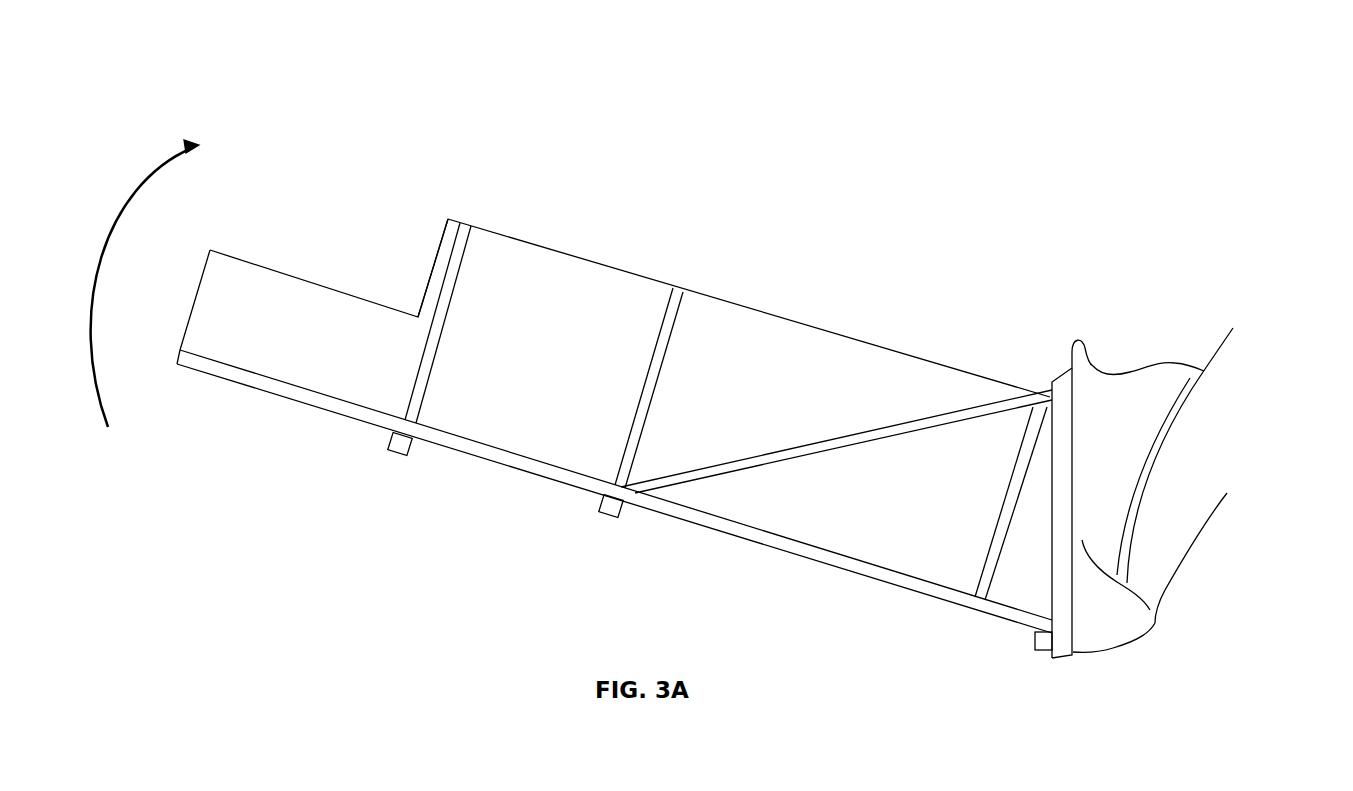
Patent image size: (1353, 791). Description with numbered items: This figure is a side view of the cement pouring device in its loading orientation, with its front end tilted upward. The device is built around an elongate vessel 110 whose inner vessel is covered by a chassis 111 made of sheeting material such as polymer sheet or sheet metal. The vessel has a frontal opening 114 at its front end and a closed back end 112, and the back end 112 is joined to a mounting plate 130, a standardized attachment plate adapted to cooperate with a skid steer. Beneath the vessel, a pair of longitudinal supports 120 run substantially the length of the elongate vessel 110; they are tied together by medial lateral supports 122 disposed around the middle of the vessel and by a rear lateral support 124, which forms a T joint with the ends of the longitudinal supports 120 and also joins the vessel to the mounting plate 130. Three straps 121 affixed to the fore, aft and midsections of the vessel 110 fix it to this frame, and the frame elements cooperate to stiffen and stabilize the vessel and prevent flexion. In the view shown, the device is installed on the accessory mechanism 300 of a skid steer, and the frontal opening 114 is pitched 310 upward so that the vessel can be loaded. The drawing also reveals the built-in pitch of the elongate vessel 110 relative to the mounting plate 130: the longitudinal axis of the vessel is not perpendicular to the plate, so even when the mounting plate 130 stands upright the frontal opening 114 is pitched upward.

The elongate vessel 110 is at (758, 308).
The chassis 111 is at (561, 363).
The back end 112 is at (1202, 543).
The frontal opening 114 is at (342, 222).
The longitudinal supports 120 is at (838, 568).
The straps 121 is at (467, 227).
The medial lateral supports 122 is at (400, 452).
The rear lateral support 124 is at (1030, 640).
The mounting plate 130 is at (1063, 377).
The accessory mechanism 300 is at (1130, 378).
The pitch 310 is at (107, 227).